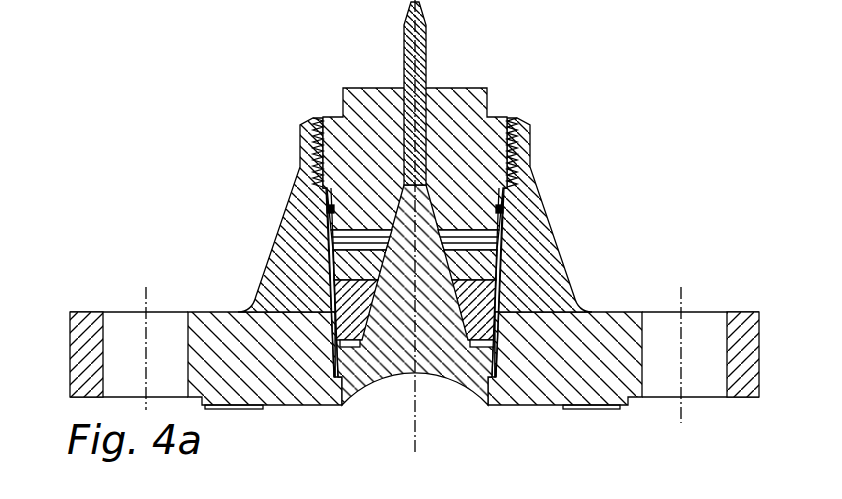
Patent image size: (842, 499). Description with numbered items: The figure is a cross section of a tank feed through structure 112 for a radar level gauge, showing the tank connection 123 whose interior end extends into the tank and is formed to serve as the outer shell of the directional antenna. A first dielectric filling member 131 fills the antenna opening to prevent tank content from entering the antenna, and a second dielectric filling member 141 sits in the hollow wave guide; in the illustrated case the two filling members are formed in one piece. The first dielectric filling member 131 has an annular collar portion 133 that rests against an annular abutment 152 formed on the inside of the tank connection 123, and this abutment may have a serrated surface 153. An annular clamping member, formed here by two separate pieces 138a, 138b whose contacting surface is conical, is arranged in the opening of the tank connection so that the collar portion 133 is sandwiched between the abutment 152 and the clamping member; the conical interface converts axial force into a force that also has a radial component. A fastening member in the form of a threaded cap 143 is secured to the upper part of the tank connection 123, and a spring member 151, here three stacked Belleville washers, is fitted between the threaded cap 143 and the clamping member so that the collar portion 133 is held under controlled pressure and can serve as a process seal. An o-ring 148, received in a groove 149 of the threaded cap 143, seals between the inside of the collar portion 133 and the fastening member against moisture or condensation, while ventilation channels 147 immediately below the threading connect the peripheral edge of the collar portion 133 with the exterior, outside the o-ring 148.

The tank feed through structure 112 is at (655, 152).
The tank connection 123 is at (278, 371).
The first dielectric filling member 131 is at (405, 396).
The annular collar portion 133 is at (320, 265).
The clamping member piece 138a is at (505, 232).
The clamping member piece 138b is at (503, 268).
The second dielectric filling member 141 is at (408, 64).
The threaded cap 143 is at (455, 140).
The ventilation channels 147 is at (538, 182).
The o-ring 148 is at (323, 213).
The groove 149 is at (329, 209).
The spring member 151 is at (512, 193).
The annular abutment 152 is at (328, 308).
The serrated surface 153 is at (500, 310).